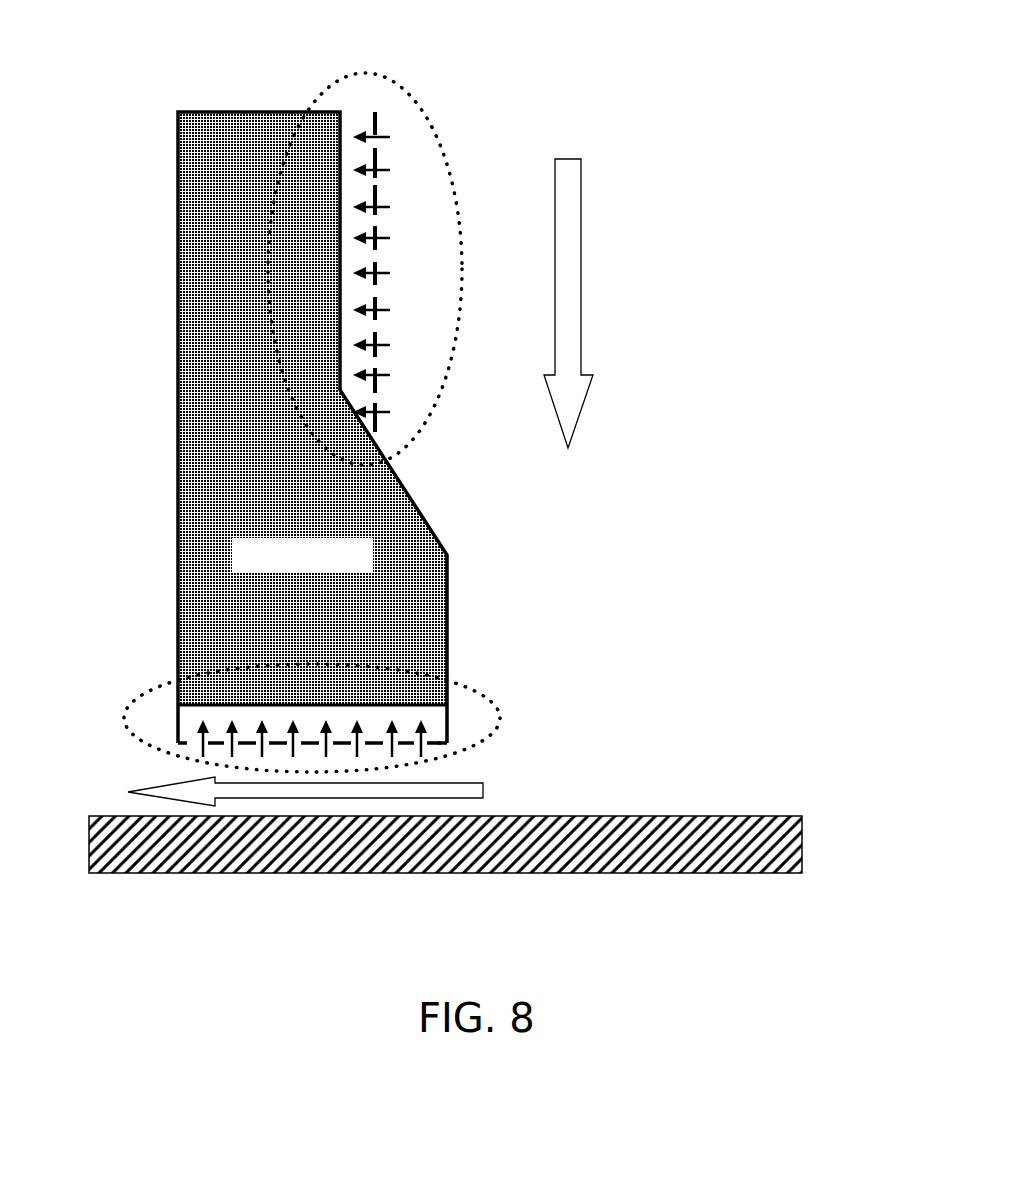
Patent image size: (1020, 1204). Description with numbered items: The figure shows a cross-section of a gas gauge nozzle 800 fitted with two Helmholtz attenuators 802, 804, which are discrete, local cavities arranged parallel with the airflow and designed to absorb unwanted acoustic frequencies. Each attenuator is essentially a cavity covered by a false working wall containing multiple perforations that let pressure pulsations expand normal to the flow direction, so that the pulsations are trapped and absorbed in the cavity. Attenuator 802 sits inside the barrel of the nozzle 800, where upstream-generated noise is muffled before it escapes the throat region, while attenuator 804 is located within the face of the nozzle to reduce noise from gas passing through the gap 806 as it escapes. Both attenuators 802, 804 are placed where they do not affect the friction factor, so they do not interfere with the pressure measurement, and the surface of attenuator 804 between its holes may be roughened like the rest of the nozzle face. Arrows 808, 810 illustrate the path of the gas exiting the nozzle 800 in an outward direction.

The gas gauge nozzle 800 is at (772, 184).
The Helmholtz attenuator 802 is at (402, 90).
The Helmholtz attenuator 804 is at (497, 710).
The gap 806 is at (90, 743).
The arrow 808 is at (582, 332).
The arrow 810 is at (483, 788).